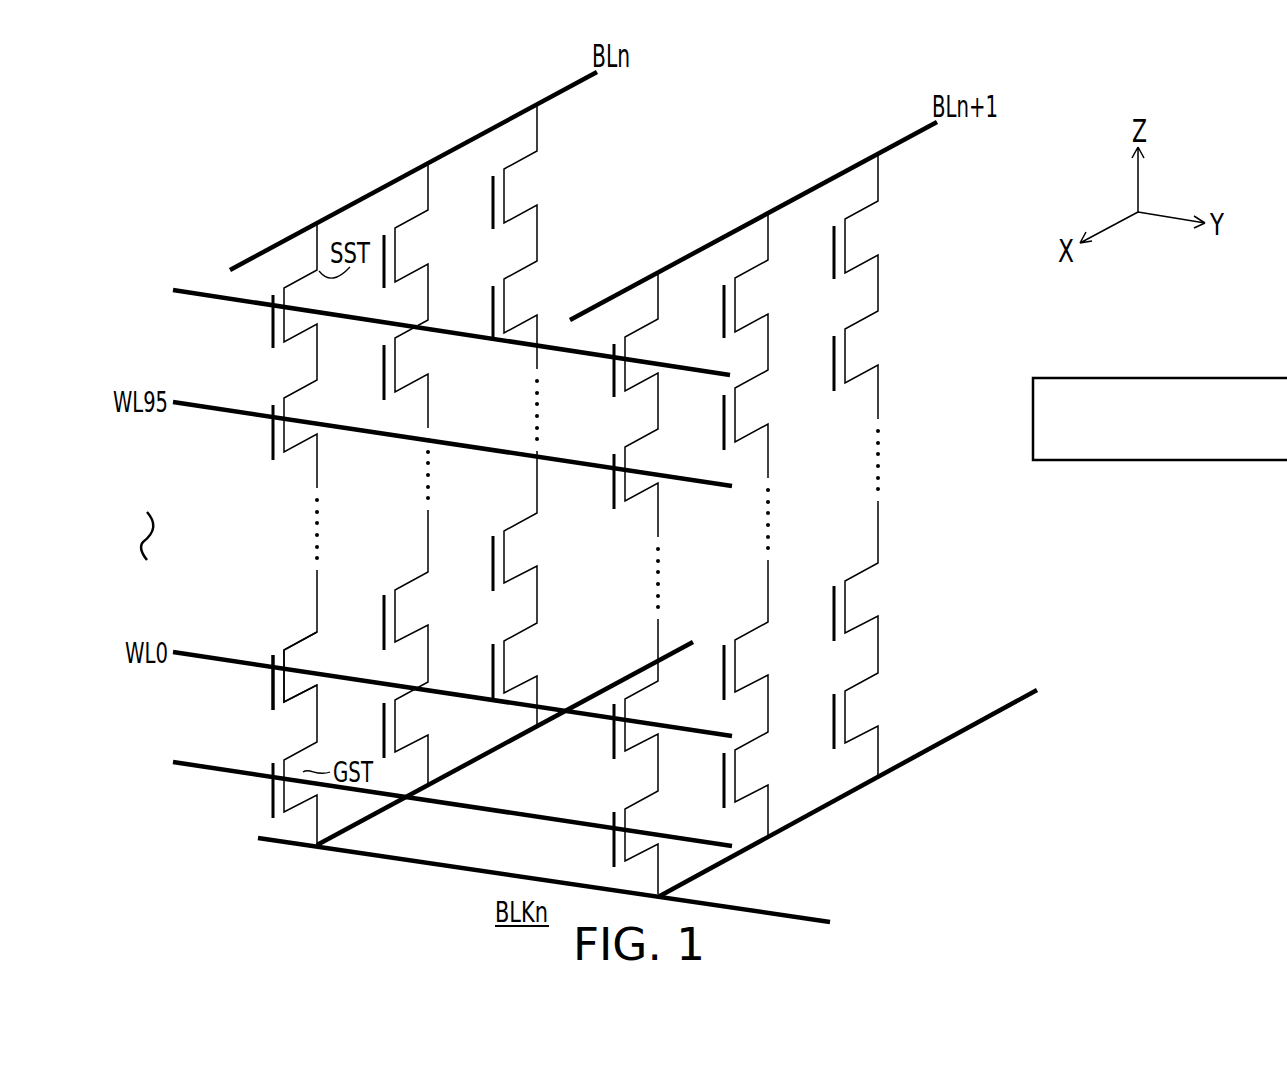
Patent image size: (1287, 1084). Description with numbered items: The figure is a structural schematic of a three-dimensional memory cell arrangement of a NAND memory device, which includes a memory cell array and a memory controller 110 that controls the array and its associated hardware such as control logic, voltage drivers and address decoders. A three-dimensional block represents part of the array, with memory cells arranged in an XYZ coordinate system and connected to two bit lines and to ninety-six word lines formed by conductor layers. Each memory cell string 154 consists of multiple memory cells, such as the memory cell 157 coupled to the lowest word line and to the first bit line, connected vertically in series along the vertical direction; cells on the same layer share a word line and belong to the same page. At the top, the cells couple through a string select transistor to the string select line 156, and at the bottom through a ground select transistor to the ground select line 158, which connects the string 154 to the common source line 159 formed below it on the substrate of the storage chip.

The memory controller 110 is at (1160, 463).
The memory cell string 154 is at (576, 523).
The string select line SSL 156 is at (142, 272).
The memory cell 157 is at (303, 653).
The ground select line GSL 158 is at (147, 782).
The common source line CSL 159 is at (858, 900).